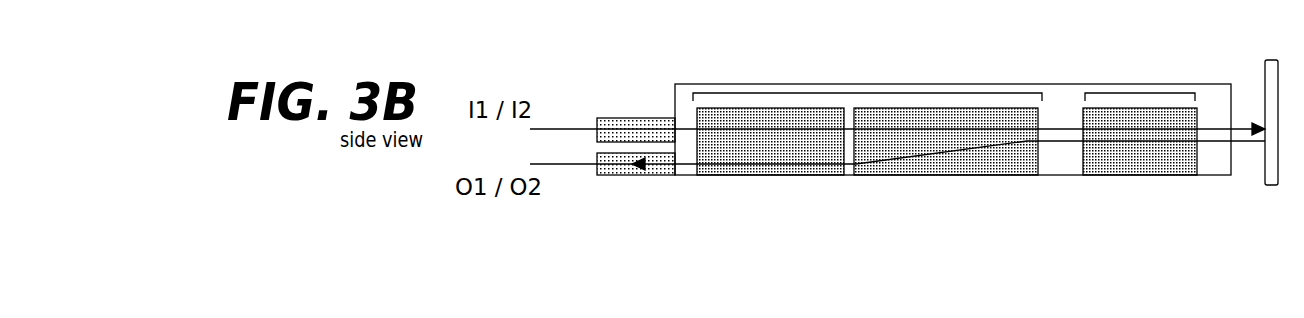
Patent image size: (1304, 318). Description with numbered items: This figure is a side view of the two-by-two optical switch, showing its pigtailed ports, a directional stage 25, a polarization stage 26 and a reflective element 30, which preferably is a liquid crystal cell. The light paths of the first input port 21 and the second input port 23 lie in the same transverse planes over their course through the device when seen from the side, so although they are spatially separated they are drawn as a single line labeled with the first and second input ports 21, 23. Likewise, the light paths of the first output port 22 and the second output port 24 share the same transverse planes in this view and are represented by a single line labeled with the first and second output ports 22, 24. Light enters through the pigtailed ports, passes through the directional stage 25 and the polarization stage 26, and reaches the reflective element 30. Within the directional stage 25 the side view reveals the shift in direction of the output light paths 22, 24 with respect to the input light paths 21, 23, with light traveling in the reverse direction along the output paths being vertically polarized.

The pigtailed port I1 21 is at (585, 128).
The pigtailed port I2 23 is at (827, 128).
The pigtailed port O1 22 is at (585, 164).
The pigtailed port O2 24 is at (835, 163).
The directional stage 25 is at (845, 93).
The polarization stage 26 is at (1143, 93).
The reflective element 30 is at (1265, 72).